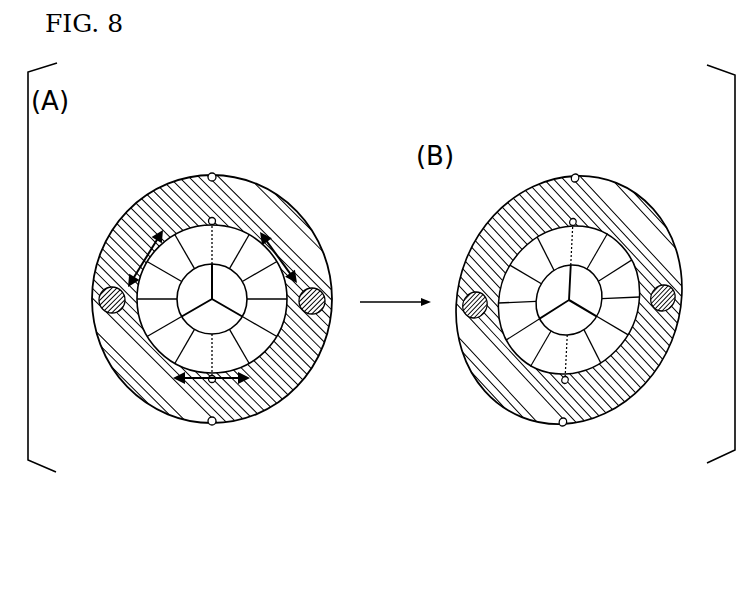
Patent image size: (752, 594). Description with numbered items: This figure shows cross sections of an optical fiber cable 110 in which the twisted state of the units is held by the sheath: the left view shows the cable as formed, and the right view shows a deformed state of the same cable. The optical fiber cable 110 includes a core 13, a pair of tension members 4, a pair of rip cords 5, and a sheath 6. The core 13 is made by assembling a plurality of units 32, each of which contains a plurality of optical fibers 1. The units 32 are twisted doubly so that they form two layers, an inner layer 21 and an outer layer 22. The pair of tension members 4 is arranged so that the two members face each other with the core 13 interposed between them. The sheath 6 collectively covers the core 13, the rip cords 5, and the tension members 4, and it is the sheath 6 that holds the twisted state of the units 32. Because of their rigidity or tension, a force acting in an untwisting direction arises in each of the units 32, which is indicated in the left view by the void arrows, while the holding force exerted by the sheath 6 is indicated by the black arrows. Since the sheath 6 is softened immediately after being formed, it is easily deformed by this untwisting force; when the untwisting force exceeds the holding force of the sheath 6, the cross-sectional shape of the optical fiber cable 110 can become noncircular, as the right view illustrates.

The optical fiber 1 is at (193, 308).
The tension member 4 is at (103, 297).
The rip cord 5 is at (205, 215).
The sheath 6 is at (185, 398).
The core 13 is at (170, 365).
The inner layer 21 is at (163, 242).
The outer layer 22 is at (173, 222).
The unit 32 is at (197, 315).
The optical fiber cable 110 is at (314, 199).